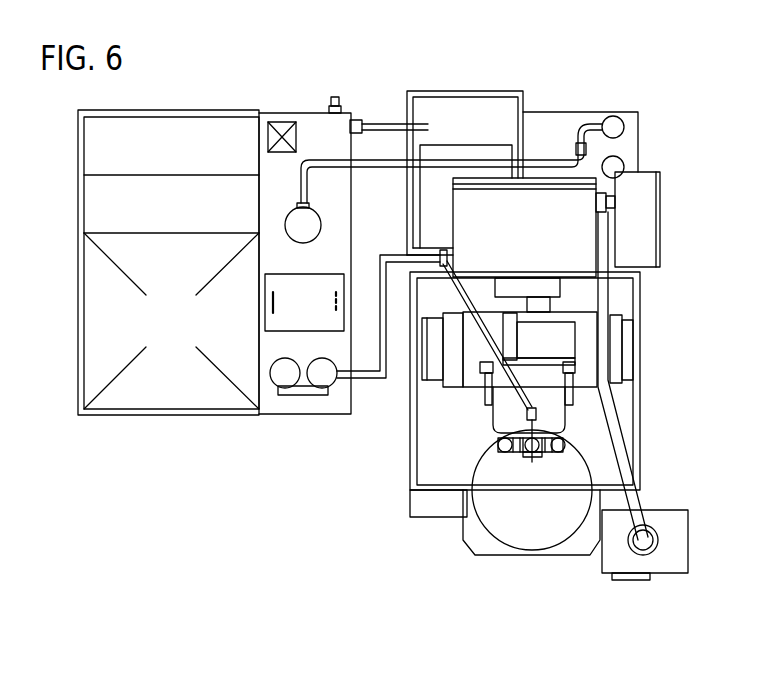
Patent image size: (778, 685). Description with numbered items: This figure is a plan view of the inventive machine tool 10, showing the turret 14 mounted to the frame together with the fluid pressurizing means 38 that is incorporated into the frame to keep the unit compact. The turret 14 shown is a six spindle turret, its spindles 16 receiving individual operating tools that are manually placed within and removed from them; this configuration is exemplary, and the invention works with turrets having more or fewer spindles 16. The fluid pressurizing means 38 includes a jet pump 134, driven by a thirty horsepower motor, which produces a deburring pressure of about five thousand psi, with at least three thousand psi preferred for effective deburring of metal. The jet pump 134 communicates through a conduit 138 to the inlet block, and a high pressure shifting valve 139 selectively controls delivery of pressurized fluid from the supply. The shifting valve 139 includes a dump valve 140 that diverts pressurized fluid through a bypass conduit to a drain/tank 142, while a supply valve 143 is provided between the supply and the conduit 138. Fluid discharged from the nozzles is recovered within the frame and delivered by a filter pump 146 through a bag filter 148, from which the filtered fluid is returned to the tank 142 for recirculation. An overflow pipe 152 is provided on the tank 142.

The machine tool 10 is at (660, 110).
The turret 14 is at (550, 454).
The spindles 16 is at (498, 447).
The fluid pressurizing means 38 is at (428, 43).
The jet pump 134 is at (161, 337).
The conduit 138 is at (384, 385).
The high pressure shifting valve 139 is at (293, 452).
The dump valve 140 is at (272, 386).
The drain/tank 142 is at (357, 266).
The supply valve 143 is at (331, 388).
The filter pump 146 is at (621, 129).
The bag filter 148 is at (290, 216).
The overflow pipe 152 is at (357, 119).